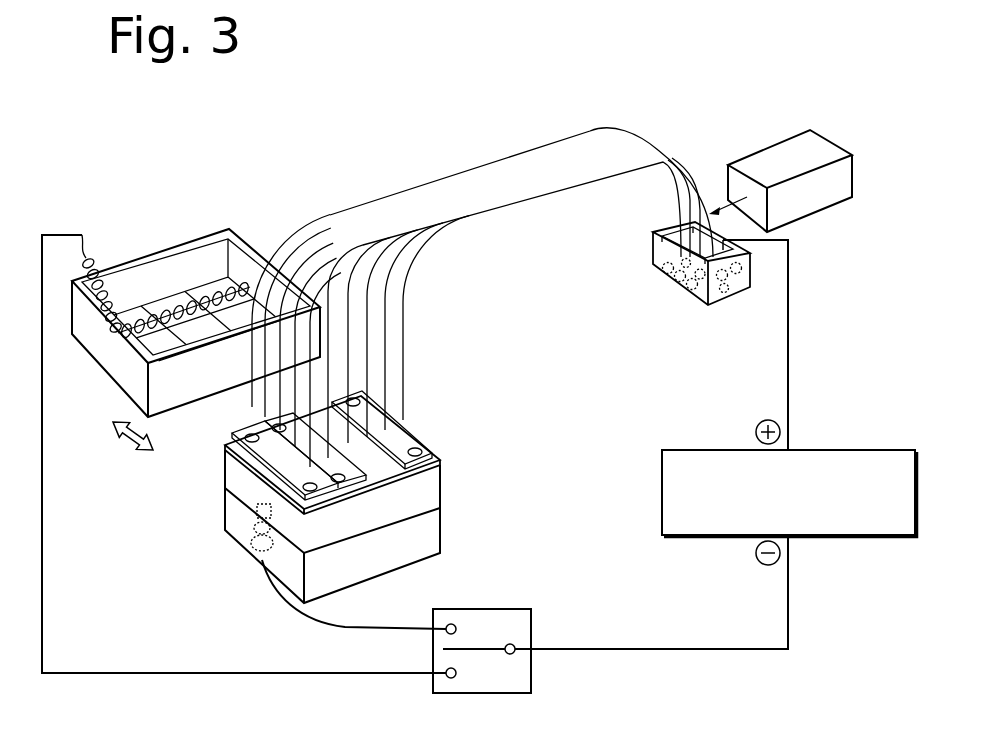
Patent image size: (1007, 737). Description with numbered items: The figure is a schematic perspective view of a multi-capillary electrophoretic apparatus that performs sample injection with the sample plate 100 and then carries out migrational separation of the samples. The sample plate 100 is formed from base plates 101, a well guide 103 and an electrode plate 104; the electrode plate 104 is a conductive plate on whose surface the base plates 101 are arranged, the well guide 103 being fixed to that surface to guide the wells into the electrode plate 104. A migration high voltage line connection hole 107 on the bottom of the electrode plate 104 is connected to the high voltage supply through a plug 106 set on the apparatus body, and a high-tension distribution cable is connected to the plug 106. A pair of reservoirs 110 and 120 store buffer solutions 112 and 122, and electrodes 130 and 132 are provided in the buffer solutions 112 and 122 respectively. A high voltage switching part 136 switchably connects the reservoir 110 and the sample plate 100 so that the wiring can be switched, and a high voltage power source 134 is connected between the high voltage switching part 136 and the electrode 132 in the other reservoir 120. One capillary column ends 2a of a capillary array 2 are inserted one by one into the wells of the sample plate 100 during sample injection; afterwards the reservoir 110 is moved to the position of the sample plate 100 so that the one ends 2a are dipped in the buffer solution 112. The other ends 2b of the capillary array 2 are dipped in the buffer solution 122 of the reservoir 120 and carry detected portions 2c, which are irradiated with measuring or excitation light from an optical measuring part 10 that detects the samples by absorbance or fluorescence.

The capillary array 2 is at (462, 290).
The one capillary column ends 2a is at (252, 407).
The other ends 2b is at (672, 260).
The detected portions 2c is at (710, 205).
The optical measuring part 10 is at (782, 150).
The sample plate 100 is at (384, 510).
The base plates 101 is at (437, 452).
The well guide 103 is at (350, 539).
The electrode plate 104 is at (437, 527).
The plug 106 is at (263, 565).
The migration high voltage line connection hole 107 is at (258, 510).
The reservoir 110 is at (196, 298).
The buffer solution 112 is at (183, 277).
The reservoir 120 is at (670, 287).
The buffer solution 122 is at (672, 235).
The electrode 130 is at (86, 257).
The electrode 132 is at (727, 258).
The high voltage power source 134 is at (817, 450).
The high voltage switching part 136 is at (533, 618).